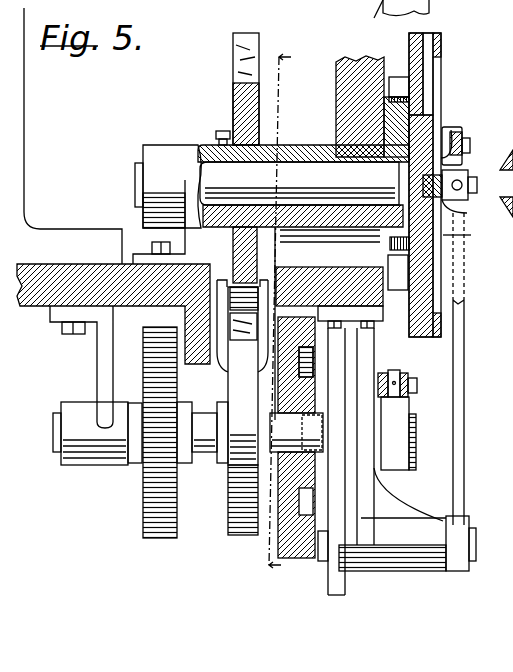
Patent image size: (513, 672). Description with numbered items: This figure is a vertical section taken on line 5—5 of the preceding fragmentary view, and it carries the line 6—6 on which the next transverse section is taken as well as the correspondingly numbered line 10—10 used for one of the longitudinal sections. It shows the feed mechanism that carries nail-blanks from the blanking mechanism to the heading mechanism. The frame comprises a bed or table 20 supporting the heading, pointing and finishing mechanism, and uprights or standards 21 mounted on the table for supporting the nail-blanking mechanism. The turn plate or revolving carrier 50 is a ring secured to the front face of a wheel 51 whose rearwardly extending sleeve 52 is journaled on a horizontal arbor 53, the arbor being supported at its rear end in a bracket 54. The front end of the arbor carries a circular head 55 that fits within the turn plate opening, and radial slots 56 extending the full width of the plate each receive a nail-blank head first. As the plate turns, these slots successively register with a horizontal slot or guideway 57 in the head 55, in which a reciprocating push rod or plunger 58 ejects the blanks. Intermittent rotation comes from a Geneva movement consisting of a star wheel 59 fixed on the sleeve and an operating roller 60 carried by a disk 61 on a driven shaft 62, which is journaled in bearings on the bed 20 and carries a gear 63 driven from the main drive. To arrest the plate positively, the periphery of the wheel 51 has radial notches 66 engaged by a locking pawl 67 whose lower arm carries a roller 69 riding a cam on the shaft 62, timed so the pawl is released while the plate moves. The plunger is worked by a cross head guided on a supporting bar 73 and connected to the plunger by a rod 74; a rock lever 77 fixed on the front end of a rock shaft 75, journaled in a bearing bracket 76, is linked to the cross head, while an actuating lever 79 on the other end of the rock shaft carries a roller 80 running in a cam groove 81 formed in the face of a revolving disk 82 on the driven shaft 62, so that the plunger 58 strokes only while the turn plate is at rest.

The section line 5— 5 is at (368, 28).
The section line 6— 6 is at (275, 313).
The section line 10— 10 is at (398, 433).
The bed or table 20 is at (52, 272).
The uprights or standards 21 is at (345, 58).
The turn plate or revolving carrier 50 is at (441, 43).
The wheel 51 is at (393, 115).
The sleeve 52 is at (292, 158).
The arbor 53 is at (299, 183).
The bracket 54 is at (168, 186).
The circular head 55 is at (472, 238).
The slots 56 is at (429, 86).
The horizontal slot or guideway 57 is at (471, 216).
The push rod or plunger 58 is at (423, 183).
The star wheel 59 is at (233, 104).
The operating roller 60 is at (243, 287).
The disk 61 is at (230, 513).
The driven shaft 62 is at (61, 451).
The gear 63 is at (153, 539).
The radial notches 66 is at (398, 77).
The locking pawl 67 is at (407, 371).
The roller 69 is at (417, 385).
The supporting bar 73 is at (473, 136).
The rod 74 is at (477, 185).
The rock shaft 75 is at (476, 548).
The bearing bracket 76 is at (404, 519).
The rock lever 77 is at (477, 369).
The actuating lever 79 is at (338, 590).
The roller 80 is at (313, 412).
The cam groove 81 is at (308, 510).
The revolving disk 82 is at (302, 558).